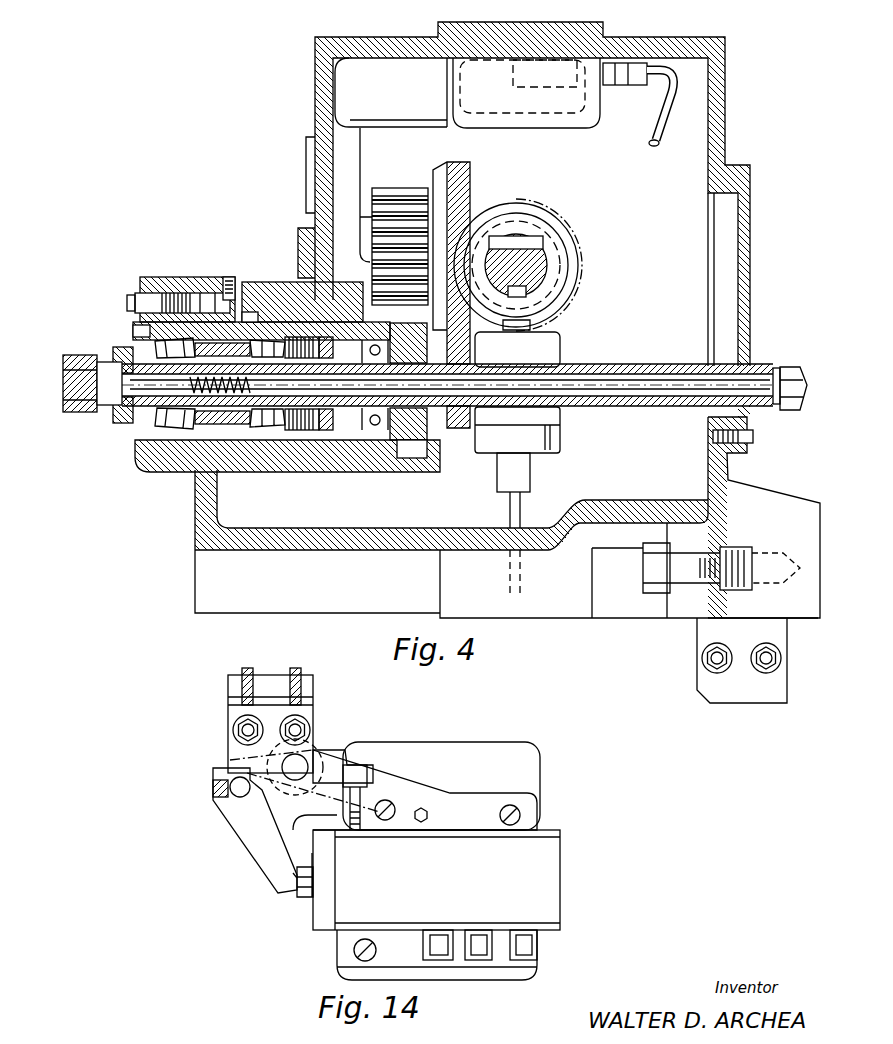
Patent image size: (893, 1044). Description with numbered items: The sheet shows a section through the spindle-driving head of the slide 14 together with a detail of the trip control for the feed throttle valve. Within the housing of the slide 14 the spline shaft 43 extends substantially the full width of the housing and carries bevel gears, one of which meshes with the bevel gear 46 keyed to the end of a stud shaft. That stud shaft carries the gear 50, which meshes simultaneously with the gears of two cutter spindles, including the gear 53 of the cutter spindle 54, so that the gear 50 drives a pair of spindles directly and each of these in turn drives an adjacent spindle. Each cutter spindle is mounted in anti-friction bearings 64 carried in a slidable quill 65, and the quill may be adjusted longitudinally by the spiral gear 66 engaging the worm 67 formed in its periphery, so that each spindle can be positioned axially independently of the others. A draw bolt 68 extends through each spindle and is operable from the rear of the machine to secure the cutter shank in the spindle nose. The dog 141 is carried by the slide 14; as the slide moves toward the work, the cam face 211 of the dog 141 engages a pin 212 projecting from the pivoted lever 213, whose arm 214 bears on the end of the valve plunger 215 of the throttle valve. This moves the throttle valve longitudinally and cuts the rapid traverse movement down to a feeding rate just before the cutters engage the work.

In FIG. 4, the slide 14 is at (726, 130).
In FIG. 4, the spline shaft 43 is at (548, 268).
In FIG. 4, the bevel gear 46 is at (467, 170).
In FIG. 4, the gear 50 is at (398, 190).
In FIG. 4, the gear 53 is at (413, 458).
In FIG. 4, the cutter spindle 54 is at (345, 445).
In FIG. 4, the anti-friction bearings 64 is at (257, 430).
In FIG. 4, the slidable quill 65 is at (323, 440).
In FIG. 4, the spiral gear 66 is at (185, 277).
In FIG. 4, the worm 67 is at (227, 280).
In FIG. 4, the draw bolt 68 is at (625, 382).
In FIG. 4, the dog 141 is at (710, 628).
In FIG. 14, the dog 141 is at (236, 710).
In FIG. 14, the cam face 211 is at (230, 757).
In FIG. 14, the pin 212 is at (238, 793).
In FIG. 14, the pivoted lever 213 is at (245, 837).
In FIG. 14, the arm 214 is at (293, 873).
In FIG. 14, the valve plunger 215 is at (303, 895).